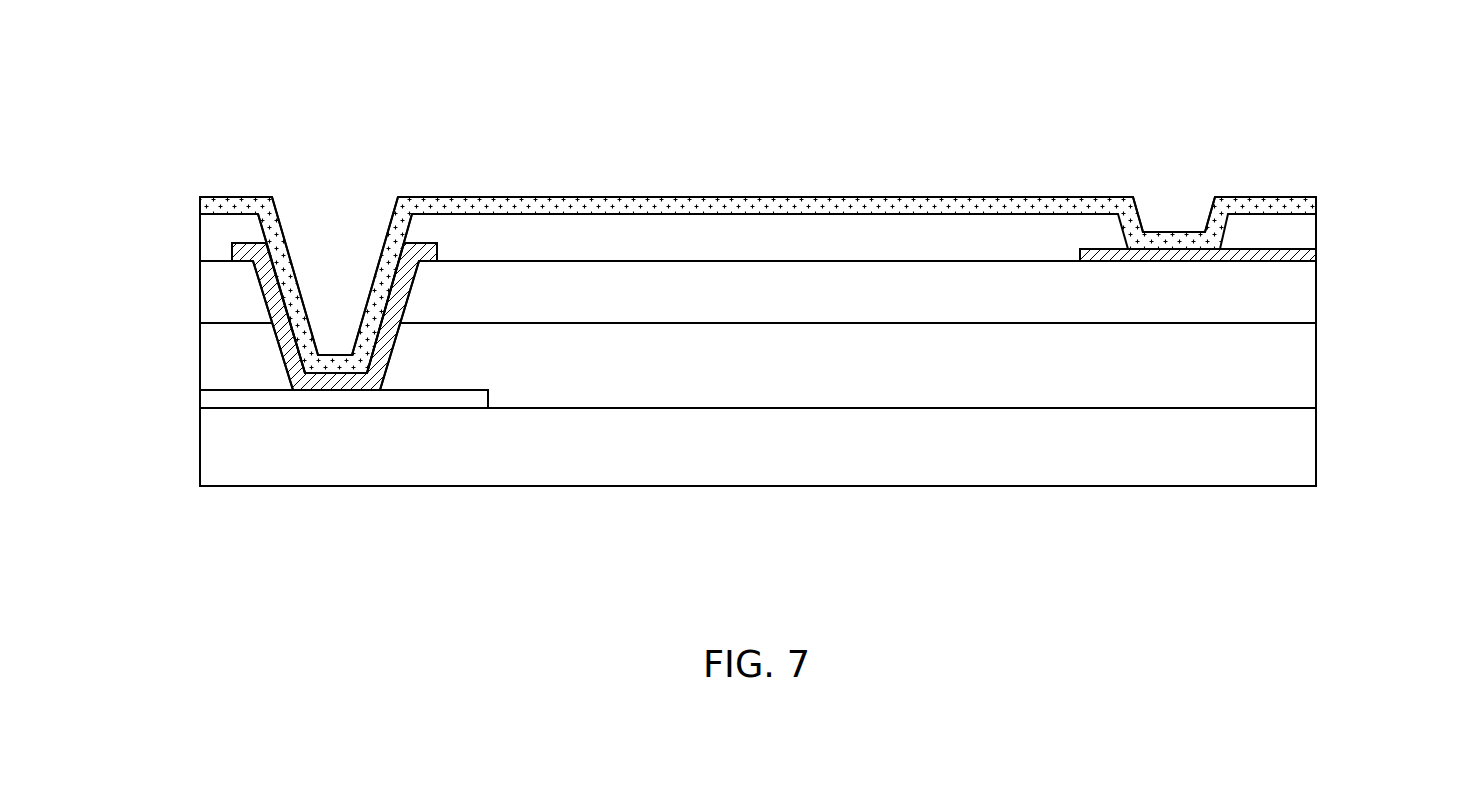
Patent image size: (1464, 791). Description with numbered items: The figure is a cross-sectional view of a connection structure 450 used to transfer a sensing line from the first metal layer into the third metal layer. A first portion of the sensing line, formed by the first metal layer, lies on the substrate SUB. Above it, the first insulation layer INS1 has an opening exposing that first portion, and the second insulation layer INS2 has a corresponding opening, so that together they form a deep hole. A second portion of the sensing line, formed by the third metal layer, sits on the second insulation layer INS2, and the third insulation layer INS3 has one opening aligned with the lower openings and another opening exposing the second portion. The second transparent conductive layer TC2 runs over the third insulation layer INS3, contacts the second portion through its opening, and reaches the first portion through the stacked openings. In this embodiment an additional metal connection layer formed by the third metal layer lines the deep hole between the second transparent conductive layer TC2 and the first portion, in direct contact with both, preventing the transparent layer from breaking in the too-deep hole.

The connection structure 450 is at (163, 73).
The substrate SUB is at (1306, 447).
The first insulation layer INS1 is at (212, 363).
The second insulation layer INS2 is at (212, 293).
The third insulation layer INS3 is at (212, 240).
The second transparent conductive layer TC2 is at (1308, 204).